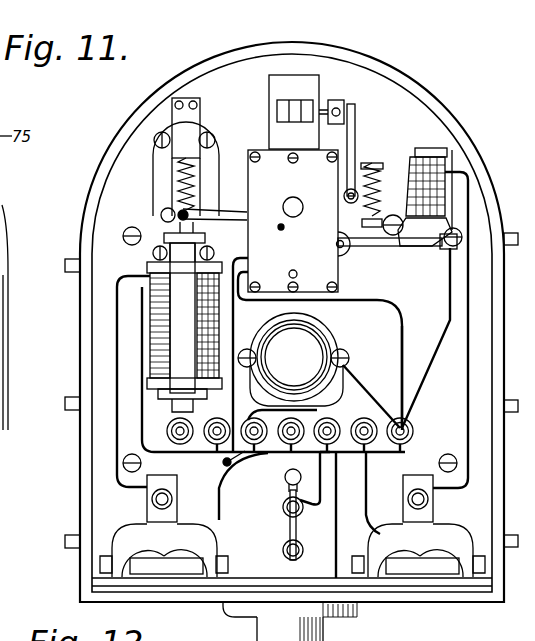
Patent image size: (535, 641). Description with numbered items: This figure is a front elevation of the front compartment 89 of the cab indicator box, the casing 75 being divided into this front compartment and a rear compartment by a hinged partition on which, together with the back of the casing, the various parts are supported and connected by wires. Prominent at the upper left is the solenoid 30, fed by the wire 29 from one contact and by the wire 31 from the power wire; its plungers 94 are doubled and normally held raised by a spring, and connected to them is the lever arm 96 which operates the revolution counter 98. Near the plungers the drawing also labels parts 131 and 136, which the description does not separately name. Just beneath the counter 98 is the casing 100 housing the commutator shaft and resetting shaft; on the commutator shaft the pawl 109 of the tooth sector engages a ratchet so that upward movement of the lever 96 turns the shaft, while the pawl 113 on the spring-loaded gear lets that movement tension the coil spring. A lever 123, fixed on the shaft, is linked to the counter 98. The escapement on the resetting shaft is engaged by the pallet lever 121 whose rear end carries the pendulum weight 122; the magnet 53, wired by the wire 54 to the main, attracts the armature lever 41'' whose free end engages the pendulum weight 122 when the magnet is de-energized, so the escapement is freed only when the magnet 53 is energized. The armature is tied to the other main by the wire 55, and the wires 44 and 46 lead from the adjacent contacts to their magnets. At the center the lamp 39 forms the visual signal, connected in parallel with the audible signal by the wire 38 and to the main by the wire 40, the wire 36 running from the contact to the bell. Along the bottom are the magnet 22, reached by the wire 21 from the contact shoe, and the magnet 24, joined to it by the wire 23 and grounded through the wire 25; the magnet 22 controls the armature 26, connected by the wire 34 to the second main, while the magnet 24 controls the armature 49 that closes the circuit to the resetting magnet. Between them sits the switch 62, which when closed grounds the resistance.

The casing 75 is at (135, 153).
The spring 131 is at (175, 211).
The armature pin 136 is at (161, 214).
The lever arm 96 is at (229, 211).
The plungers 94 is at (147, 265).
The solenoid 30 is at (150, 310).
The wire 29 is at (117, 355).
The wire 31 is at (137, 403).
The revolution counter 98 is at (303, 91).
The casing 100 is at (305, 168).
The lever 123 is at (344, 199).
The pendulum weight 122 is at (370, 162).
The pallet lever 121 is at (386, 248).
The magnet 53 is at (443, 185).
The armature lever 41'' is at (466, 218).
The front compartment 89 is at (483, 235).
The wire 44 is at (234, 262).
The wire 46 is at (245, 281).
The pawl 113 is at (243, 354).
The lamp 39 is at (296, 337).
The wire 54 is at (450, 320).
The wire 55 is at (403, 358).
The wire 38 is at (363, 388).
The wire 40 is at (316, 410).
The pawl 109 is at (485, 404).
The wire 36 is at (223, 462).
The wire 21 is at (258, 463).
The wire 25 is at (366, 473).
The wire 34 is at (338, 510).
The switch 62 is at (283, 537).
The magnet 22 is at (185, 523).
The wire 23 is at (117, 523).
The armature 26 is at (193, 543).
The armature 49 is at (392, 545).
The magnet 24 is at (443, 567).